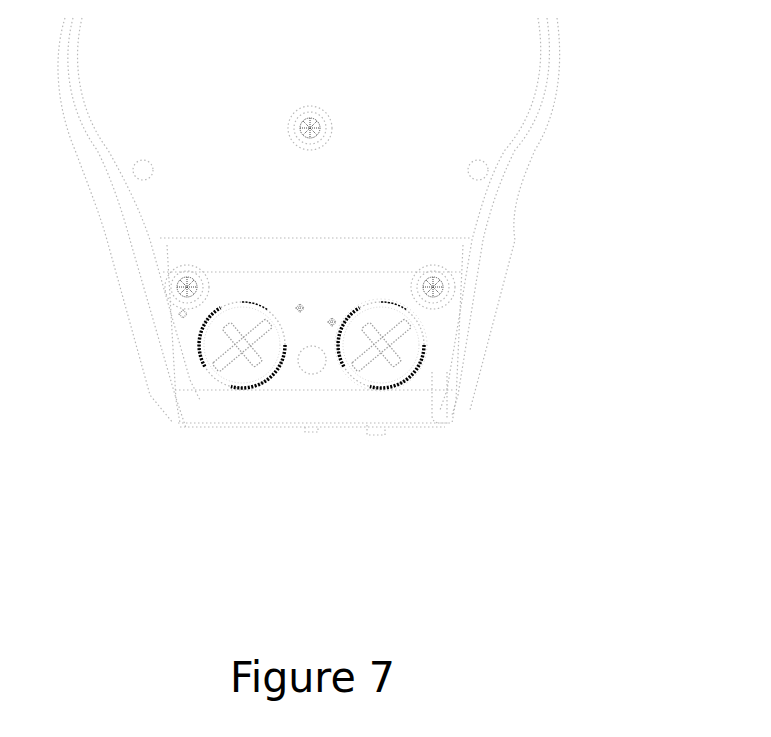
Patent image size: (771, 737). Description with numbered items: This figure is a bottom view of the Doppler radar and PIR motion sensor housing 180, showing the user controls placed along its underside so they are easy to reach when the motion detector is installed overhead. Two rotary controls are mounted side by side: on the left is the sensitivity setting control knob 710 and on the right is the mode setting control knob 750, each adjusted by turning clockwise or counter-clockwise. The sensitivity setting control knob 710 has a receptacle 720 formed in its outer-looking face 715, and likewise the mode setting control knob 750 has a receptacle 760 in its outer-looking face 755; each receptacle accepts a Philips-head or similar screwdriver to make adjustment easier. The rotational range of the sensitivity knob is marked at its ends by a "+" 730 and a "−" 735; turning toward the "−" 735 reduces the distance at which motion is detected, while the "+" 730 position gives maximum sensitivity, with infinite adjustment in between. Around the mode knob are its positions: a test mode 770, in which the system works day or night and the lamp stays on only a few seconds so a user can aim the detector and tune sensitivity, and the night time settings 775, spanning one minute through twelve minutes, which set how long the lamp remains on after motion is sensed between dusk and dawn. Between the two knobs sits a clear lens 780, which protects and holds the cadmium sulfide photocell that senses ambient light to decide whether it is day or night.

The Doppler radar and PIR motion sensor housing 180 is at (628, 58).
The "−" sign 735 is at (180, 318).
The sensitivity setting control knob 710 is at (200, 358).
The receptacle 720 is at (233, 358).
The outer-looking face 715 is at (250, 377).
The clear lens 780 is at (305, 372).
The "+" sign 730 is at (300, 302).
The test mode 770 is at (332, 317).
The mode setting control knob 750 is at (422, 357).
The receptacle 760 is at (370, 360).
The outer-looking face 755 is at (378, 375).
The night time settings 775 is at (413, 378).